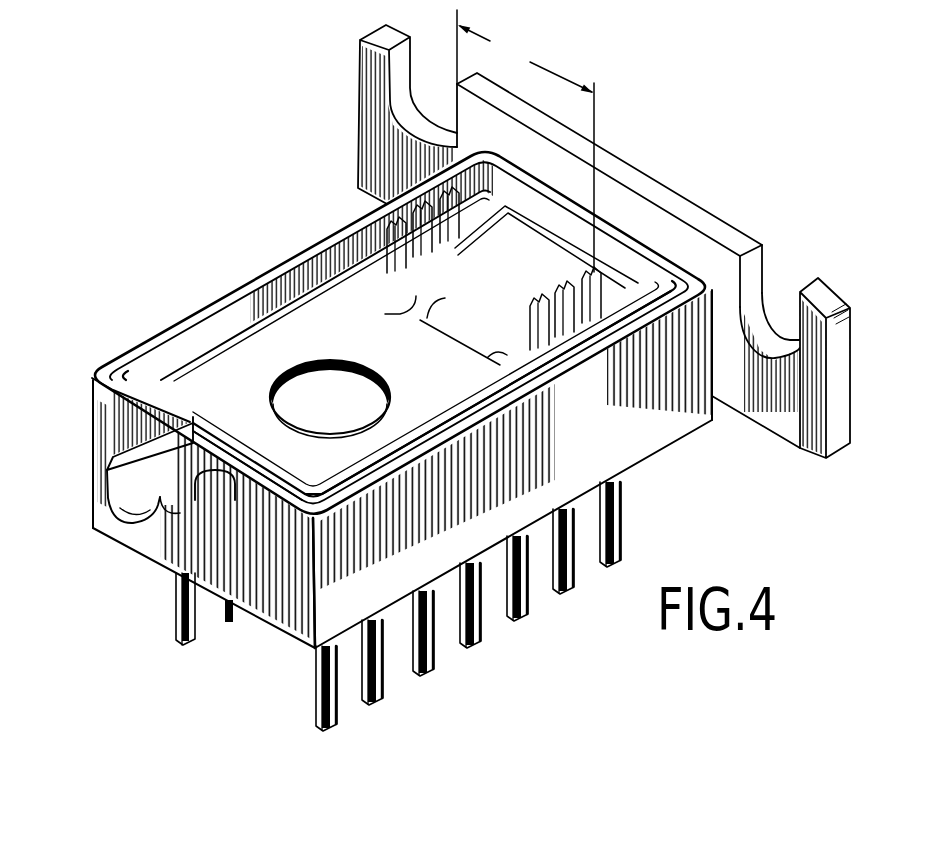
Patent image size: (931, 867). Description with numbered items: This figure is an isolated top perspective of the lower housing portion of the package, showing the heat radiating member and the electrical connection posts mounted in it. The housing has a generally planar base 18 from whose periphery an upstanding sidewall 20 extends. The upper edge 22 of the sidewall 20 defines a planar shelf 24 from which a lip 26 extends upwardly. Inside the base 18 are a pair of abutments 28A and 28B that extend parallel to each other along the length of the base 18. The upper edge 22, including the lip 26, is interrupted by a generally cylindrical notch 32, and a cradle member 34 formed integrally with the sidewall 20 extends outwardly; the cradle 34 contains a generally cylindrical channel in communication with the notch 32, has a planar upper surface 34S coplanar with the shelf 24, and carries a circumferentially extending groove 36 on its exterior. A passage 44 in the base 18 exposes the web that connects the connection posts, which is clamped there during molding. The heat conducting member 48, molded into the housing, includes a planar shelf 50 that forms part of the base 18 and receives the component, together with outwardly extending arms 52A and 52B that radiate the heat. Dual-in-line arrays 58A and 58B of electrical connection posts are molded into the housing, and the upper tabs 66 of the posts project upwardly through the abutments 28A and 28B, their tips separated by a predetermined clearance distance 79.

The base 18 is at (420, 381).
The sidewall 20 is at (588, 443).
The upper edge 22 is at (364, 488).
The planar shelf 24 is at (320, 514).
The lip 26 is at (270, 482).
The abutment 28A is at (320, 308).
The abutment 28B is at (392, 432).
The notch 32 is at (158, 447).
The cradle member 34 is at (128, 510).
The planar upper surface 34S is at (175, 512).
The circumferentially extending groove 36 is at (200, 495).
The passage 44 is at (300, 375).
The heat conducting member 48 is at (722, 213).
The planar shelf 50 is at (414, 322).
The arm 52A is at (377, 106).
The arm 52B is at (790, 410).
The dual-in-line array of electrical connection posts 58A is at (250, 617).
The dual-in-line array of electrical connection posts 58B is at (613, 585).
The upper tabs 66 is at (525, 322).
The predetermined clearance distance 79 is at (525, 141).